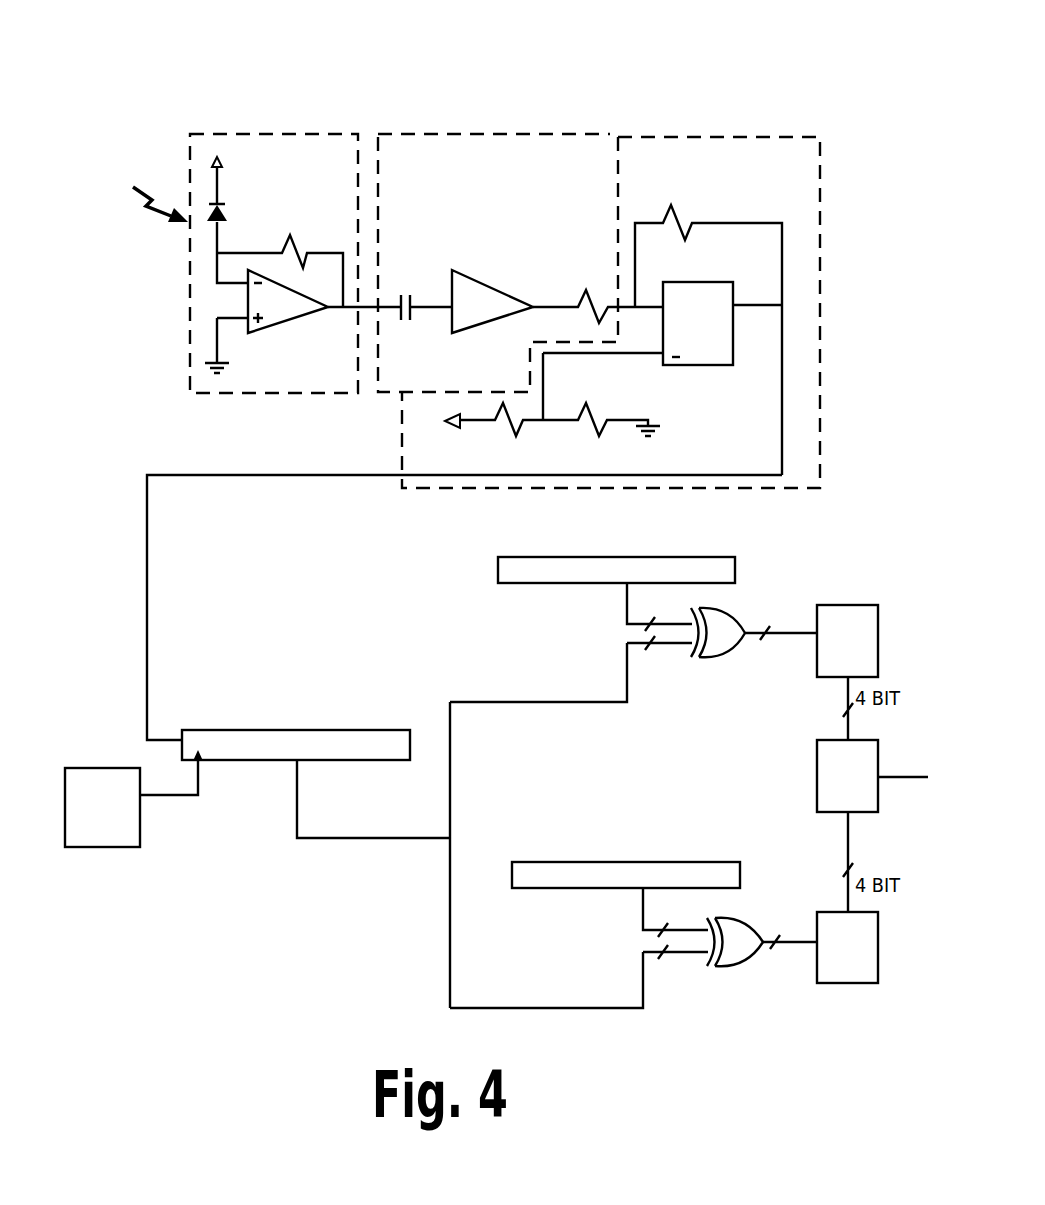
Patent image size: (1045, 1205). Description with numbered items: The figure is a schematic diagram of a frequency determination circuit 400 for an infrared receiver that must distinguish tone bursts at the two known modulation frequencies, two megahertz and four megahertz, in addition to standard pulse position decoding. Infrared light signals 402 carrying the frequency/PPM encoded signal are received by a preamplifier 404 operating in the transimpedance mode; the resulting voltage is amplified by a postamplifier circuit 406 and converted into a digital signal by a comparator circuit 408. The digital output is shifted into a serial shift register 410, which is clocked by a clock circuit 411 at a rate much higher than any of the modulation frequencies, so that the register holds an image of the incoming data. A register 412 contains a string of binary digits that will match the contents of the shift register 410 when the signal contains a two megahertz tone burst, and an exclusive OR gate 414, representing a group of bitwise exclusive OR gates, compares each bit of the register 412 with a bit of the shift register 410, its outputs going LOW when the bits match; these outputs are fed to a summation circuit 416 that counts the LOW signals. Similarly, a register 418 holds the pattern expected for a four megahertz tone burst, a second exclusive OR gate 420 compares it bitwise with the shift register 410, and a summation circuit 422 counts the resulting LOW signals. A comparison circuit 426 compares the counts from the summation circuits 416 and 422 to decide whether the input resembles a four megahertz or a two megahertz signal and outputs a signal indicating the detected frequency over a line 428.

The frequency determination circuit 400 is at (493, 58).
The infrared light signals 402 is at (141, 188).
The preamplifier 404 is at (298, 133).
The postamplifier circuit 406 is at (566, 133).
The comparator circuit 408 is at (822, 226).
The shift register 410 is at (400, 728).
The clock circuit 411 is at (75, 768).
The register 412 is at (722, 556).
The exclusive OR gate 414 is at (733, 617).
The summation circuit 416 is at (847, 641).
The register 418 is at (733, 855).
The exclusive OR gate 420 is at (737, 917).
The summation circuit 422 is at (847, 947).
The comparison circuit 426 is at (847, 776).
The line 428 is at (905, 794).